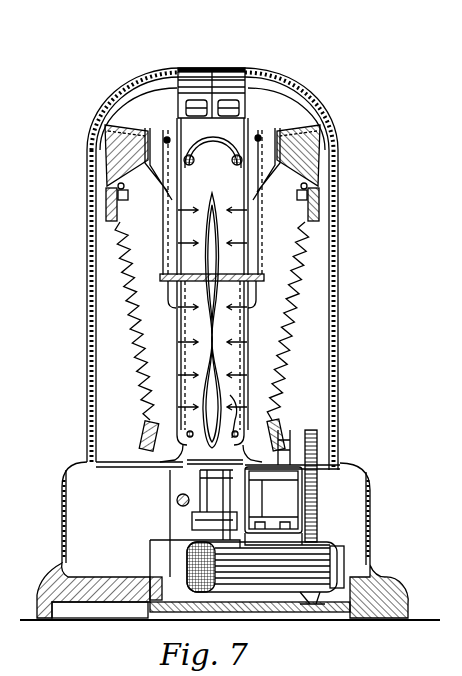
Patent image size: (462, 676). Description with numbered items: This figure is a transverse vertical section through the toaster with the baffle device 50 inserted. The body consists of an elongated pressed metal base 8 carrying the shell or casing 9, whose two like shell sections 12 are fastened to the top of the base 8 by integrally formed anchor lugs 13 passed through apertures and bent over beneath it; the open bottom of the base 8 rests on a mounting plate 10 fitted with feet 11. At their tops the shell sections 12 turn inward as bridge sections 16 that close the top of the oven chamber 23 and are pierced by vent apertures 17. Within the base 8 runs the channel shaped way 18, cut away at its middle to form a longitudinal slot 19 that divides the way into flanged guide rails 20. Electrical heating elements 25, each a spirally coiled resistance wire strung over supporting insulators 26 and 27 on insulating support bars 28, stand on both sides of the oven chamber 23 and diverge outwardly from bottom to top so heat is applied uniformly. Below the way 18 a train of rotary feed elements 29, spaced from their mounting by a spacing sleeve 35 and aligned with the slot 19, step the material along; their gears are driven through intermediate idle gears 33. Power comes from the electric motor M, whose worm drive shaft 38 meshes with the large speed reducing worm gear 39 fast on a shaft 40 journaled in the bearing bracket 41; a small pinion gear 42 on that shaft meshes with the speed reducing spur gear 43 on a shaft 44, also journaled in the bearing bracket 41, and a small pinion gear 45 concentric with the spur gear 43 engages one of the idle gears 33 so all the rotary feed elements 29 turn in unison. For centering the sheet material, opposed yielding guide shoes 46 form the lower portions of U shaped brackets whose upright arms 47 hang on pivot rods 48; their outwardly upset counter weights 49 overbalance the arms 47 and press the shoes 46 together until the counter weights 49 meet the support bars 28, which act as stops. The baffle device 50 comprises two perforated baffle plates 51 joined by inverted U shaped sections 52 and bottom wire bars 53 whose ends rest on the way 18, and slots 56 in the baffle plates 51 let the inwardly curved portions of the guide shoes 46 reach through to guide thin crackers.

The base 8 is at (372, 535).
The shell or casing 9 is at (349, 316).
The mounting plate 10 is at (398, 592).
The feet 11 is at (405, 618).
The shell sections 12 is at (339, 333).
The anchor lugs 13 is at (82, 470).
The bridge sections 16 is at (190, 68).
The vent apertures 17 is at (200, 68).
The way 18 is at (200, 472).
The longitudinal slot 19 is at (213, 480).
The flanged guide rails 20 is at (187, 382).
The oven chamber 23 is at (310, 248).
The electrical heating elements 25 is at (133, 318).
The supporting insulators 26 is at (128, 195).
The supporting insulators 27 is at (165, 418).
The support bars 28 is at (106, 212).
The rotary feed elements 29 is at (192, 500).
The idle gears 33 is at (210, 476).
The spacing sleeve 35 is at (183, 506).
The worm drive shaft 38 is at (340, 550).
The worm gear 39 is at (282, 502).
The shaft 40 is at (282, 492).
The bearing bracket 41 is at (273, 500).
The small pinion gear 42 is at (252, 465).
The speed reducing spur gear 43 is at (232, 536).
The shaft 44 is at (300, 528).
The small pinion gear 45 is at (183, 557).
The guide shoes 46 is at (177, 294).
The upright arms 47 is at (178, 252).
The pivot rods 48 is at (167, 140).
The counter weights 49 is at (110, 160).
The baffle device 50 is at (213, 152).
The baffle plates 51 is at (222, 196).
The inverted U shaped sections 52 is at (240, 120).
The wire bars 53 is at (238, 420).
The slots 56 is at (170, 275).
The electric motor M is at (292, 593).